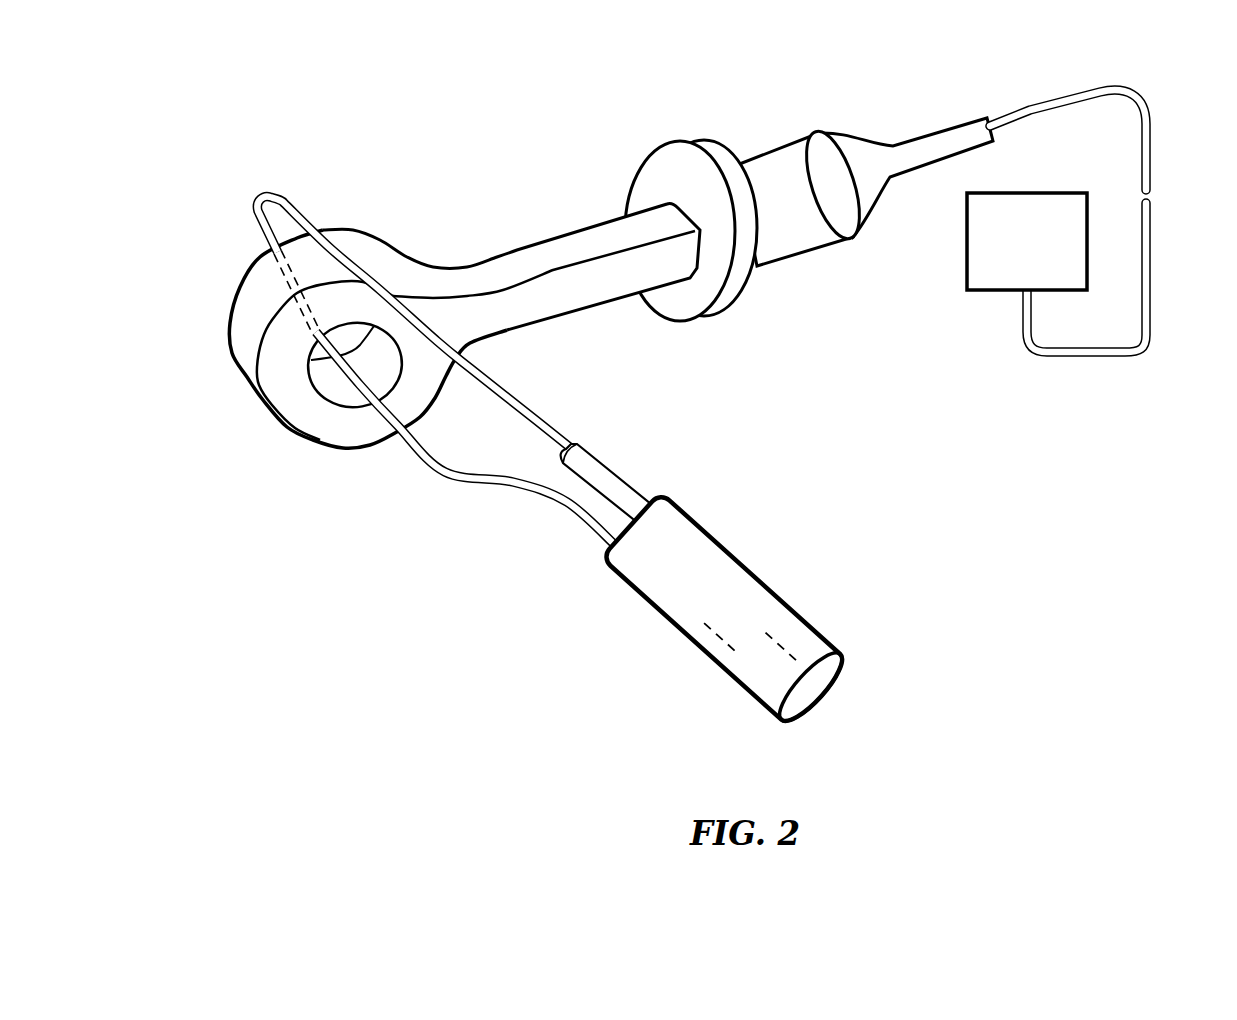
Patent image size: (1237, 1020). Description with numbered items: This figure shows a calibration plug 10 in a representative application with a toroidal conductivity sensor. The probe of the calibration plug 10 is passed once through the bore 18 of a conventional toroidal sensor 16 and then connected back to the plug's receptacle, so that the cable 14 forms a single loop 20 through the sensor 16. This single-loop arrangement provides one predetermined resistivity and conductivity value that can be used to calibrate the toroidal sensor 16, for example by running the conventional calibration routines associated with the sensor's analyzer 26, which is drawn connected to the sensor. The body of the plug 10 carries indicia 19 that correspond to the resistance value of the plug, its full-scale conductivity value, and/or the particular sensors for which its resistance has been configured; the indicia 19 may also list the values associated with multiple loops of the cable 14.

The calibration plug 10 is at (711, 660).
The cable 14 is at (445, 479).
The toroidal sensor 16 is at (257, 391).
The bore 18 is at (332, 387).
The indicia 19 is at (782, 629).
The single loop 20 is at (268, 182).
The analyzer 26 is at (967, 243).